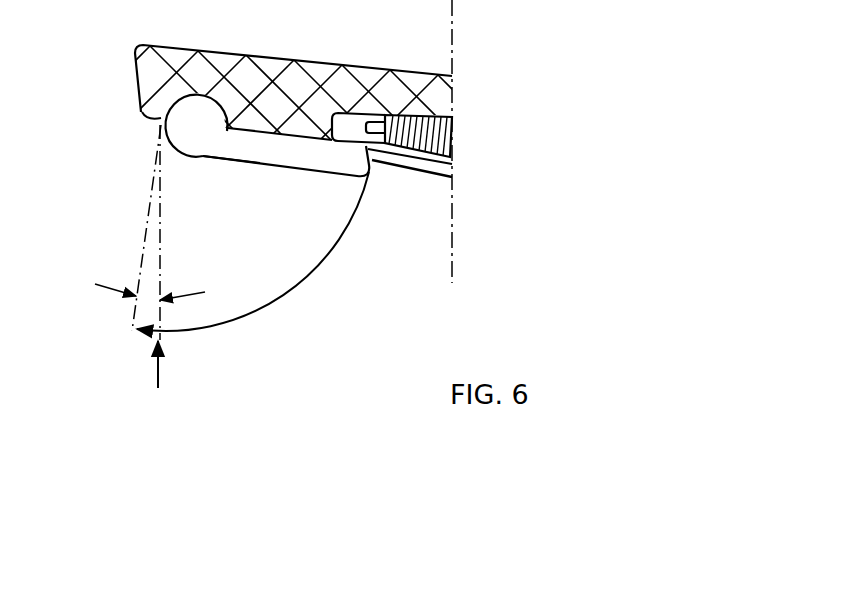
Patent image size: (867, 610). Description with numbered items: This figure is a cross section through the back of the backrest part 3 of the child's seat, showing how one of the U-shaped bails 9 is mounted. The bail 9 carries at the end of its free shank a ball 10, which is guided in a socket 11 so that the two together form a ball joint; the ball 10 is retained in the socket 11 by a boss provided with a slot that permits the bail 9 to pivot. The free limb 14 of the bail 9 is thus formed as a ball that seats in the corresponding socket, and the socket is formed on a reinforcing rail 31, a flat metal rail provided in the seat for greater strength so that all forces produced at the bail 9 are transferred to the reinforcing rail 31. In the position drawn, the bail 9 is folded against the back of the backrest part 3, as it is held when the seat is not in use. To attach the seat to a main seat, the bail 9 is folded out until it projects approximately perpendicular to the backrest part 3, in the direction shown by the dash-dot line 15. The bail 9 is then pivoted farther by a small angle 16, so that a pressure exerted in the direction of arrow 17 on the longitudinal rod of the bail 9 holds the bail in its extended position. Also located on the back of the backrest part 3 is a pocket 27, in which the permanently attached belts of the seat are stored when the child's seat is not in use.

The backrest part 3 is at (425, 88).
The U-shaped bail 9 is at (266, 147).
The ball 10 is at (192, 108).
The socket 11 is at (167, 107).
The free limb 14 is at (248, 161).
The dash-dot line 15 is at (145, 231).
The small angle 16 is at (136, 309).
The arrow 17 is at (162, 371).
The pocket 27 is at (440, 166).
The reinforcing rail 31 is at (450, 132).